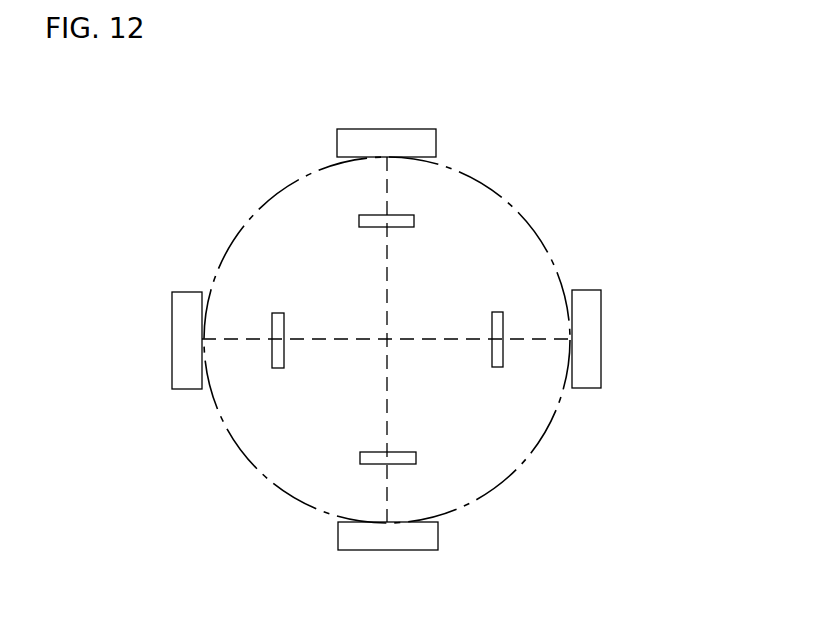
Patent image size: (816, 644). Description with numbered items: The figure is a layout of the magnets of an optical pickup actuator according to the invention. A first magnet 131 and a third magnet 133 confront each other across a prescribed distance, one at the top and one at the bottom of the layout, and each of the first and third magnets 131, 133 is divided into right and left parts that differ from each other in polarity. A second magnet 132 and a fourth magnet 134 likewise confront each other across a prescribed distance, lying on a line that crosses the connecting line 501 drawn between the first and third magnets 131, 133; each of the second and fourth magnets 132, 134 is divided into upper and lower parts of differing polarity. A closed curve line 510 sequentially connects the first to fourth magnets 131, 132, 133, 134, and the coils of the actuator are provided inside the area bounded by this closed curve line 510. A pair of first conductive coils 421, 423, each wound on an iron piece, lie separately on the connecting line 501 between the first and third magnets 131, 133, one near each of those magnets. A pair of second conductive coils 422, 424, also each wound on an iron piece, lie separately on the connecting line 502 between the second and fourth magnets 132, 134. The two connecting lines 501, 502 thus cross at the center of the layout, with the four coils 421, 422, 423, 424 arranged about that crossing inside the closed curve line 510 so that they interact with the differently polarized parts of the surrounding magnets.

The first magnet 131 is at (432, 150).
The second magnet 132 is at (183, 326).
The third magnet 133 is at (420, 533).
The fourth magnet 134 is at (592, 302).
The first conductive coil 421 is at (410, 218).
The second conductive coil 422 is at (272, 326).
The first conductive coil 423 is at (370, 464).
The second conductive coil 424 is at (497, 368).
The connecting line 501 is at (387, 303).
The connecting line 502 is at (543, 340).
The closed curve line 510 is at (272, 197).